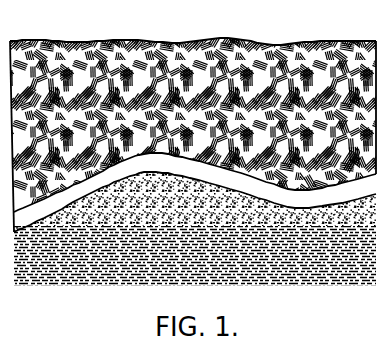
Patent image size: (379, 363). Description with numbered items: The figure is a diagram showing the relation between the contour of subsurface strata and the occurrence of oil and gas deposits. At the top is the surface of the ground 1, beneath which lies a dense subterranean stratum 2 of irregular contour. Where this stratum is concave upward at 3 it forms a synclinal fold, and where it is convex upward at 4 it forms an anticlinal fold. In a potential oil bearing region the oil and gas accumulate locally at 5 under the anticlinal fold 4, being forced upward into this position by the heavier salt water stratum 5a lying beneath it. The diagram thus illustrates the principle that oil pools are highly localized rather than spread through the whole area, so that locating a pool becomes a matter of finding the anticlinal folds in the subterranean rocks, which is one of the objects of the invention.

The surface of the ground 1 is at (193, 120).
The dense subterranean stratum 2 is at (357, 166).
The synclinal fold 3 is at (317, 174).
The anticlinal fold 4 is at (195, 180).
The oil and gas accumulation 5 is at (195, 202).
The salt water stratum 5a is at (195, 256).